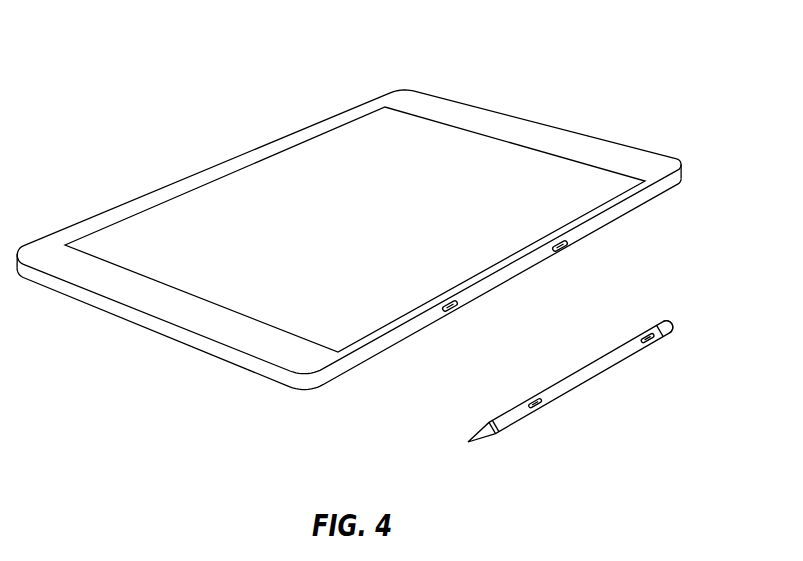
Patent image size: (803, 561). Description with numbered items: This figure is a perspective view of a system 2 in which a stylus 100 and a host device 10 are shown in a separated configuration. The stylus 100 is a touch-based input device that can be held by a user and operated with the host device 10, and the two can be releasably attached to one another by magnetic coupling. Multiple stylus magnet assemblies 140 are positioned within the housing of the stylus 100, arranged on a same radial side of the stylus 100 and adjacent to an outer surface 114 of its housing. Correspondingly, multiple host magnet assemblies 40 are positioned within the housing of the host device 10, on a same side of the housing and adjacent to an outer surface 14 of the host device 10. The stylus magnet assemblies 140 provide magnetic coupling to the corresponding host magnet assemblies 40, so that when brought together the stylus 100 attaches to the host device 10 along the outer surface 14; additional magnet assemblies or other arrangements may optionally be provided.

The system 2 is at (62, 120).
The host device 10 is at (538, 124).
The outer surface 14 is at (622, 210).
The host magnet assemblies 40 is at (448, 312).
The stylus 100 is at (683, 330).
The outer surface 114 is at (659, 319).
The stylus magnet assemblies 140 is at (649, 345).